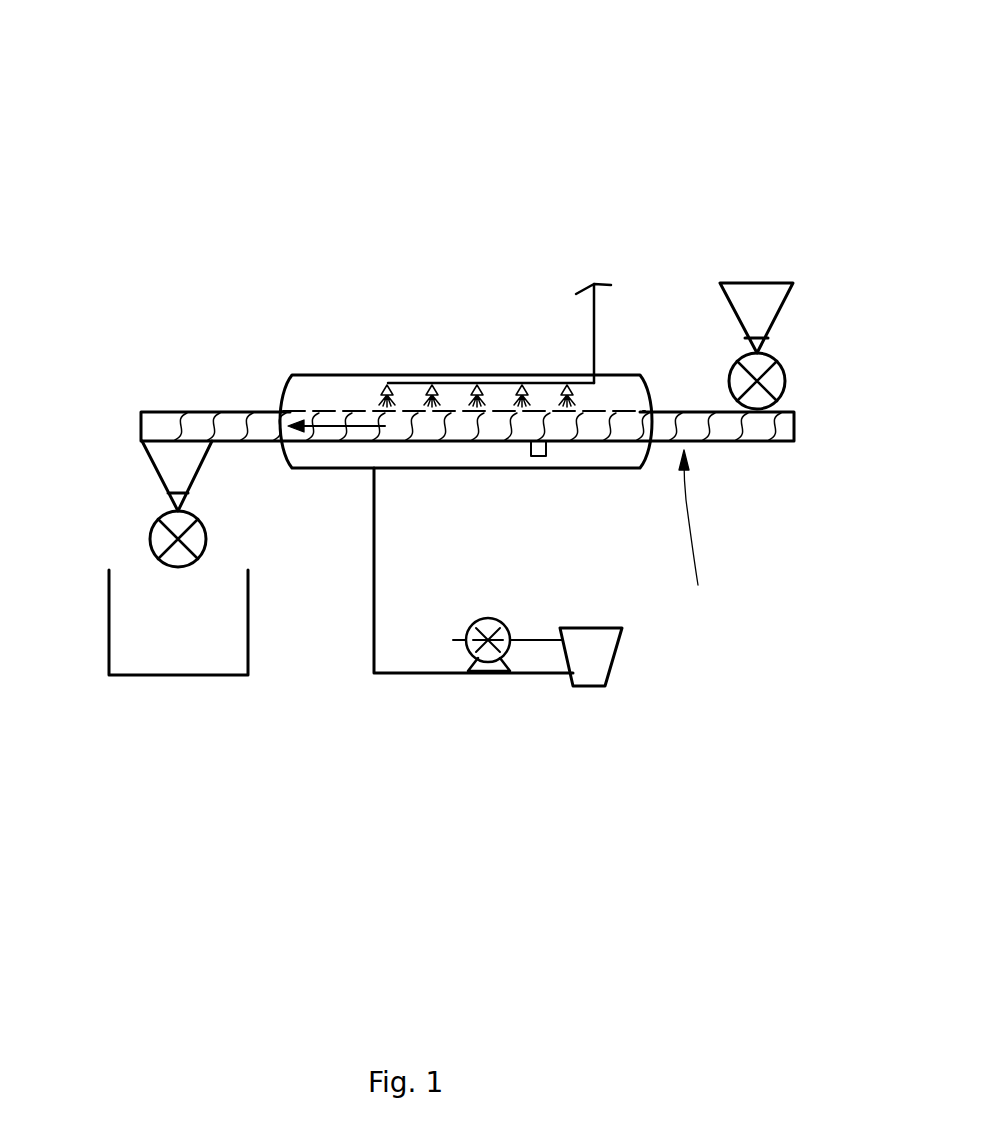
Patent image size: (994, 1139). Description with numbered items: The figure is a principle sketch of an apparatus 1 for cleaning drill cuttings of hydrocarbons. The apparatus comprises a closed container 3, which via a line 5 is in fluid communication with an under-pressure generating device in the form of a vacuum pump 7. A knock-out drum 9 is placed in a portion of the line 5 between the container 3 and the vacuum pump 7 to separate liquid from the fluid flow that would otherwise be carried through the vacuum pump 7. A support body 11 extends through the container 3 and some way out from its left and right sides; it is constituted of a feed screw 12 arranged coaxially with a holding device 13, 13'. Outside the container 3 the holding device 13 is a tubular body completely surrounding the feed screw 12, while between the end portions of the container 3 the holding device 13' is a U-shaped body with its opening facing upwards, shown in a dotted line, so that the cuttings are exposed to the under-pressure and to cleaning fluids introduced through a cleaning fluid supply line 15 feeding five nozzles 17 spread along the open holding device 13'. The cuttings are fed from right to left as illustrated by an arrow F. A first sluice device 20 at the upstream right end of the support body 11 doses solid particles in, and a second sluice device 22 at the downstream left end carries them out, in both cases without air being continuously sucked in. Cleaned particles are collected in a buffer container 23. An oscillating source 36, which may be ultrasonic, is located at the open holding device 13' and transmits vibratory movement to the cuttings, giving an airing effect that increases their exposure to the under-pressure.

The apparatus 1 is at (207, 157).
The closed container 3 is at (347, 375).
The arrow F is at (319, 410).
The line 5 is at (400, 677).
The vacuum pump 7 is at (548, 672).
The knock-out drum 9 is at (615, 685).
The support body 11 is at (700, 539).
The feed screw 12 is at (706, 442).
The holding device 13 is at (486, 520).
The open holding device 13' is at (492, 284).
The cleaning fluid supply line 15 is at (593, 330).
The nozzles 17 is at (458, 390).
The first sluice device 20 is at (780, 368).
The second sluice device 22 is at (150, 527).
The buffer container 23 is at (175, 677).
The oscillating source 36 is at (546, 450).